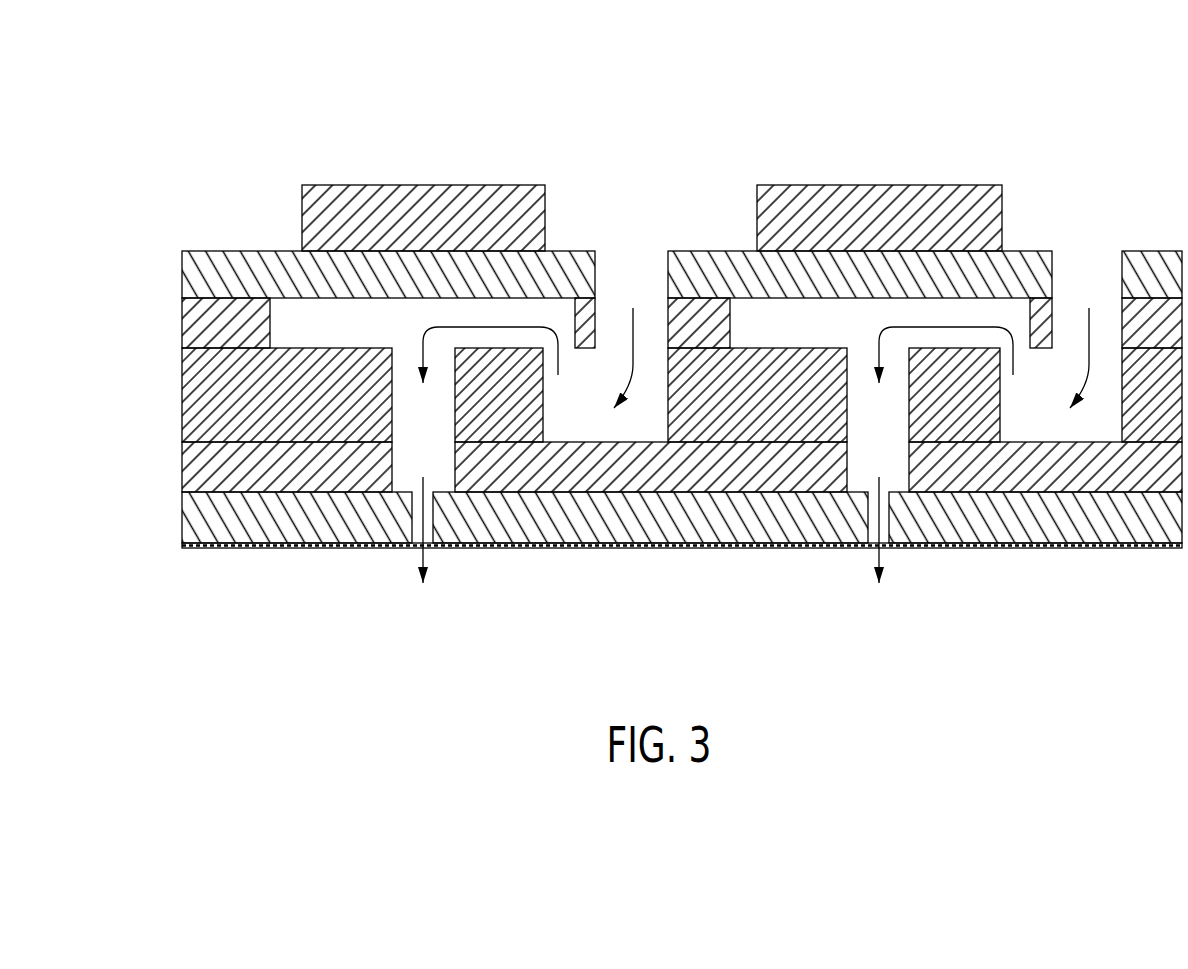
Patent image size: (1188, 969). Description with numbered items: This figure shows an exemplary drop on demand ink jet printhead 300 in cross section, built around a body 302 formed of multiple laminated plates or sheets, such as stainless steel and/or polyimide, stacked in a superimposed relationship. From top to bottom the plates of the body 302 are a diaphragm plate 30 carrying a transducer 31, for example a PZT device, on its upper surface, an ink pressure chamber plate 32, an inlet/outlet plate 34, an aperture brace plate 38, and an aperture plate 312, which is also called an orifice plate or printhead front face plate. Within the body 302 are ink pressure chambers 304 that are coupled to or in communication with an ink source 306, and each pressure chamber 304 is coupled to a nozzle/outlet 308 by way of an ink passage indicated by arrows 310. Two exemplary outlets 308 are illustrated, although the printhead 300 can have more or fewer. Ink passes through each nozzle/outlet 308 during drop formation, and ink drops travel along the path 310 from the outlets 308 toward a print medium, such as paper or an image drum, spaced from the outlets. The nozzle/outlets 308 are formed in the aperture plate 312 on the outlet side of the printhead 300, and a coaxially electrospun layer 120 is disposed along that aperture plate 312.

The drop on demand ink jet printhead 300 is at (838, 99).
The body 302 is at (566, 620).
The transducer 31 is at (428, 184).
The diaphragm plate 30 is at (203, 279).
The ink pressure chamber plate 32 is at (203, 324).
The inlet/outlet plate 34 is at (203, 401).
The aperture brace plate 38 is at (203, 462).
The aperture plate 312 is at (201, 522).
The coaxially electrospun layer 120 is at (684, 549).
The ink pressure chamber 304 is at (310, 337).
The ink source 306 is at (632, 277).
The nozzle/outlet 308 is at (418, 541).
The ink passage 310 is at (423, 338).